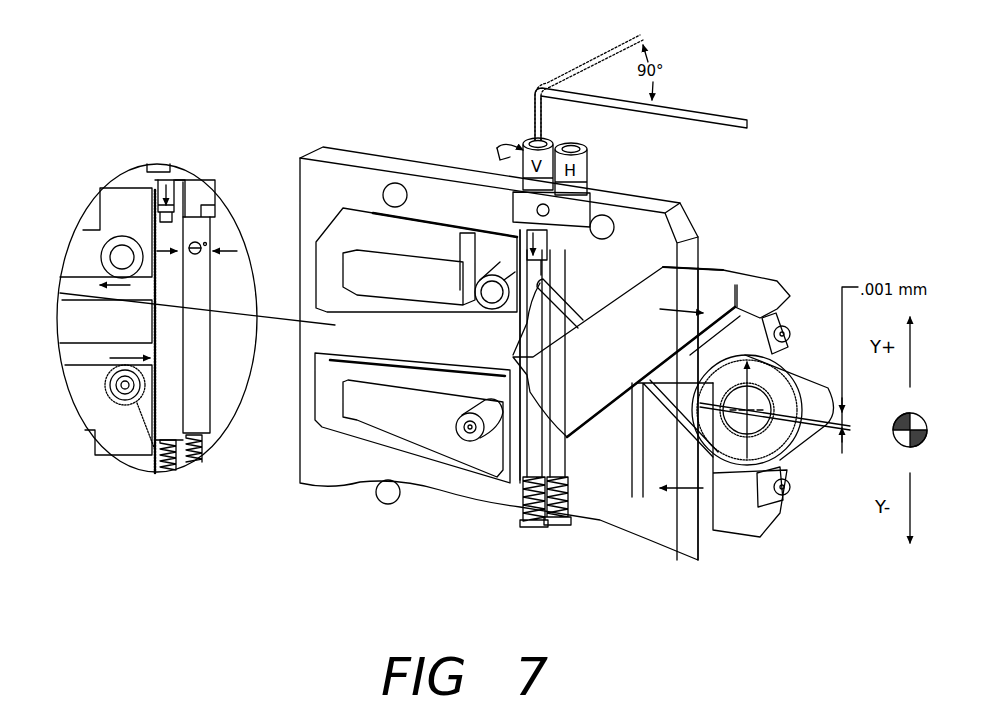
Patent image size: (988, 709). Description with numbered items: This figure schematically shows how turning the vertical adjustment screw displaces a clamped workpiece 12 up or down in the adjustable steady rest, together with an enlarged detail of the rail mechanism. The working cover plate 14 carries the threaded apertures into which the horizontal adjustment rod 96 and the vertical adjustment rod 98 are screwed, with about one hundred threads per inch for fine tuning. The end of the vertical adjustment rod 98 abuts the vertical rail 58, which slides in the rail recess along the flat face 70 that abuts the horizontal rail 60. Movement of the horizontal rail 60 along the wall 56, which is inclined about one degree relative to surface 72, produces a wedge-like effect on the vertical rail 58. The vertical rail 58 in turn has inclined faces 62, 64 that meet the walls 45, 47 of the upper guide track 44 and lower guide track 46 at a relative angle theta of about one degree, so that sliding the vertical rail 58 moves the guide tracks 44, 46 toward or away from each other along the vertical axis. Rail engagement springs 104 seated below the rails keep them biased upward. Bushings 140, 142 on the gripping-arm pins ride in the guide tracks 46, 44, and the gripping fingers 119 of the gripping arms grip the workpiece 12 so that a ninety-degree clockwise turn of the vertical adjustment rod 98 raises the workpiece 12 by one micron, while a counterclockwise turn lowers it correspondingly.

The workpiece 12 is at (793, 360).
The working cover plate 14 is at (358, 155).
The upper guide track 44 is at (416, 260).
The wall of the upper guide track 45 is at (152, 252).
The lower guide track 46 is at (412, 418).
The wall of the lower guide track 47 is at (153, 418).
The wall 56 is at (203, 310).
The vertical rail 58 is at (170, 278).
The horizontal rail 60 is at (197, 383).
The inclined face 62 is at (158, 243).
The inclined face 64 is at (157, 398).
The flat face 70 is at (193, 377).
The surface 72 is at (183, 343).
The horizontal adjustment rod 96 is at (197, 190).
The vertical adjustment rod 98 is at (166, 202).
The rail engagement springs 104 is at (165, 455).
The gripping fingers 119 is at (795, 310).
The bushing 140 is at (109, 232).
The bushing 142 is at (115, 407).